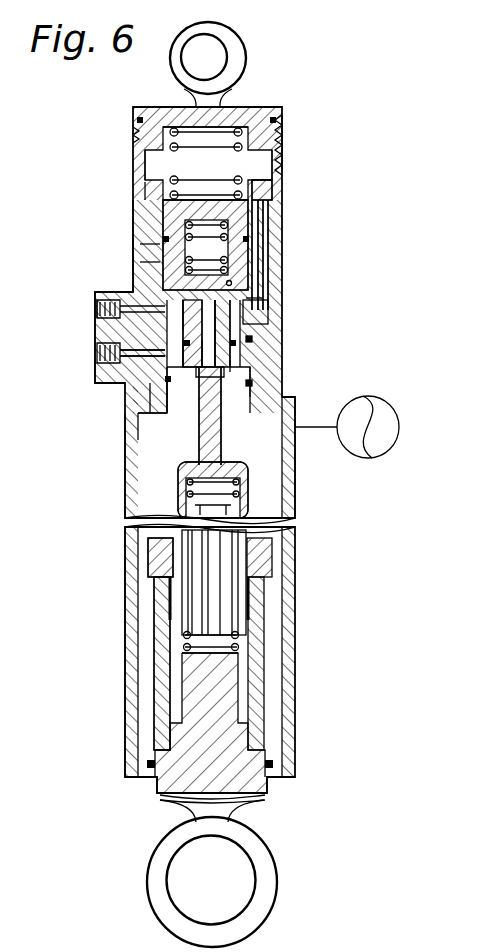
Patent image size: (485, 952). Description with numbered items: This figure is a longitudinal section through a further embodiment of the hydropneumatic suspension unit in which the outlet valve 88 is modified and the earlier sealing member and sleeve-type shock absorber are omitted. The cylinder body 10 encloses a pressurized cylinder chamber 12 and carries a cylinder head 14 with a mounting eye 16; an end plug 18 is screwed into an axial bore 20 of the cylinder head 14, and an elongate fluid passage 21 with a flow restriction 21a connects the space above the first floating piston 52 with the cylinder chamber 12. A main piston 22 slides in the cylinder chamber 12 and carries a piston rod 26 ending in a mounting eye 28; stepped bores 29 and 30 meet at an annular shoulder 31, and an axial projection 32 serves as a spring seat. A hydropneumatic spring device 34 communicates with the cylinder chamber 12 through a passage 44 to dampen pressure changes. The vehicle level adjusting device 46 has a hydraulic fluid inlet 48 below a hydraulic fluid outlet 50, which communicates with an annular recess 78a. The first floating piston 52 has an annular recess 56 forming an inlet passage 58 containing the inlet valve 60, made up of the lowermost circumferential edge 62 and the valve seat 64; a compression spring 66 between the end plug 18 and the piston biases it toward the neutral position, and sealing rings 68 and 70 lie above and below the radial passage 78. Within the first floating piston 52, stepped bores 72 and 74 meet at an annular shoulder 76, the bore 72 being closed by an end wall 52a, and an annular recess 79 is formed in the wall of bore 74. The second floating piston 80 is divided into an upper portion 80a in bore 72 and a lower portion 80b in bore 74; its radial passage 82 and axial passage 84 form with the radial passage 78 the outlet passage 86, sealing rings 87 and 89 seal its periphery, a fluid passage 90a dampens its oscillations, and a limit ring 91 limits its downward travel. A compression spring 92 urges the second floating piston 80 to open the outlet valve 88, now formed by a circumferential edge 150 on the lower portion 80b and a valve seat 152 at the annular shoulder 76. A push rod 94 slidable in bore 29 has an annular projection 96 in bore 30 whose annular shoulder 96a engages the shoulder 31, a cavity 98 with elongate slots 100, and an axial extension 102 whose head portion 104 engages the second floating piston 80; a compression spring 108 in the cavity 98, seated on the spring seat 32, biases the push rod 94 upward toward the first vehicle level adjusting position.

The cylinder body 10 is at (123, 482).
The cylinder chamber 12 is at (296, 459).
The cylinder head 14 is at (130, 218).
The mounting eye 16 is at (234, 54).
The end plug 18 is at (238, 110).
The axial bore 20 is at (284, 160).
The elongate fluid passage 21 is at (268, 207).
The flow restriction 21a is at (272, 188).
The main piston 22 is at (135, 562).
The piston rod 26 is at (150, 684).
The mounting eye 28 is at (265, 866).
The axial bore 29 is at (245, 558).
The axial bore 30 is at (270, 682).
The annular shoulder 31 is at (268, 578).
The axial projection 32 is at (182, 667).
The hydropneumatic spring device 34 is at (391, 409).
The passage 44 is at (296, 428).
The vehicle level adjusting device 46 is at (68, 323).
The hydraulic fluid inlet 48 is at (118, 360).
The hydraulic fluid outlet 50 is at (100, 306).
The first floating piston 52 is at (160, 188).
The end wall 52a is at (209, 210).
The circumferential annular recess 56 is at (160, 402).
The inlet passage 58 is at (122, 398).
The inlet valve 60 is at (164, 414).
The lowermost circumferential edge 62 is at (148, 432).
The valve seat 64 is at (165, 415).
The compression spring 66 is at (152, 152).
The sealing ring 68 is at (150, 197).
The sealing ring 70 is at (140, 400).
The axial bore 72 is at (229, 250).
The axial bore 74 is at (245, 374).
The annular shoulder 76 is at (225, 305).
The radially extending passage 78 is at (115, 328).
The annular recess 78a is at (120, 300).
The annular recess 79 is at (133, 262).
The second floating piston 80 is at (250, 334).
The upper portion of second floating piston 80a is at (235, 268).
The lower portion of second floating piston 80b is at (240, 322).
The radially extending passage 82 is at (140, 250).
The axially extending passage 84 is at (240, 356).
The outlet passage 86 is at (92, 357).
The sealing ring 87 is at (165, 245).
The outlet valve 88 is at (160, 262).
The sealing ring 89 is at (252, 342).
The fluid passage 90a is at (232, 283).
The limit ring 91 is at (252, 380).
The compression spring 92 is at (256, 232).
The push rod 94 is at (246, 470).
The annular projection 96 is at (168, 634).
The annular shoulder 96a is at (170, 612).
The cavity 98 is at (238, 490).
The elongate slot 100 is at (202, 607).
The axial extension 102 is at (222, 445).
The head portion 104 is at (258, 393).
The compression spring 108 is at (248, 512).
The circumferential edge 150 is at (266, 307).
The valve seat 152 is at (262, 298).